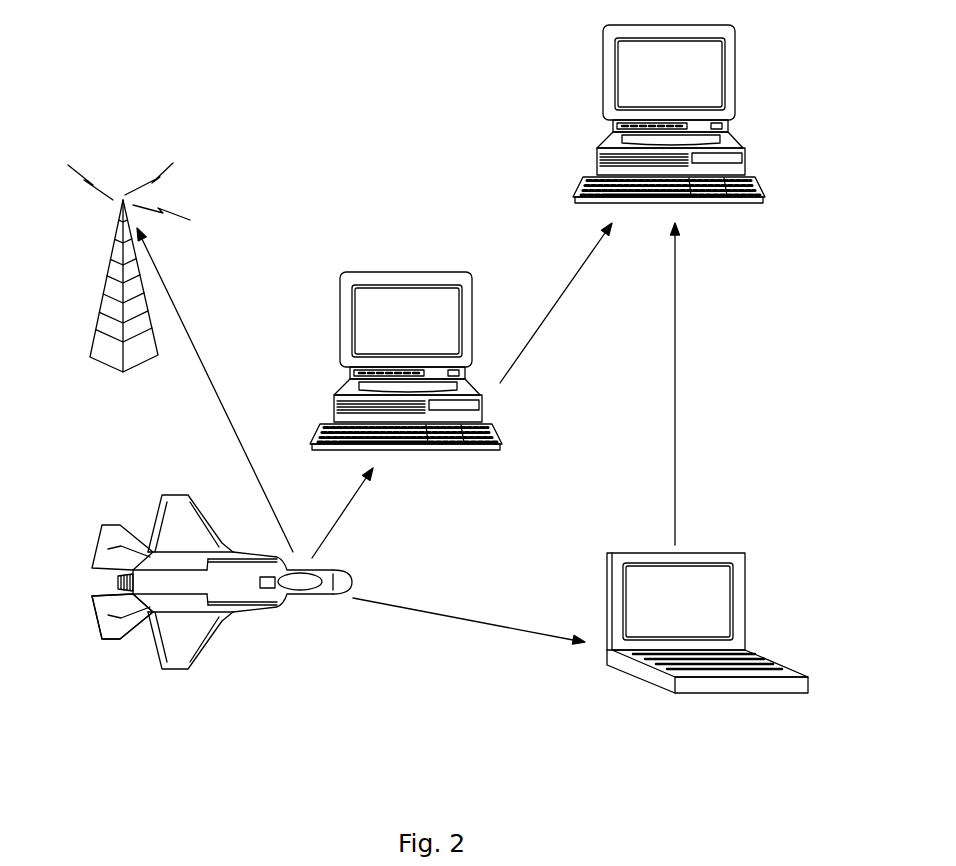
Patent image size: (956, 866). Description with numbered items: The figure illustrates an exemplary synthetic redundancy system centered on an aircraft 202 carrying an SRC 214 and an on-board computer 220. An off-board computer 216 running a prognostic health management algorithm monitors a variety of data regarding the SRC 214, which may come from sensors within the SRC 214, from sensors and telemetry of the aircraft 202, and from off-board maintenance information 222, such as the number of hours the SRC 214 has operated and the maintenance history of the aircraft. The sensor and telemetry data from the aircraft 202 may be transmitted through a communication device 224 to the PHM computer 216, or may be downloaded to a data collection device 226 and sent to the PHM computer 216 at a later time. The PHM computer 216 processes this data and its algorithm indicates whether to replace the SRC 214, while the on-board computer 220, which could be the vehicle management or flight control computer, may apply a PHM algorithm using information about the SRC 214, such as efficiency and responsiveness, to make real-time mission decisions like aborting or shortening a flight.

The aircraft 202 is at (133, 690).
The SRC 214 is at (105, 611).
The computer 216 is at (738, 70).
The on-board computer 220 is at (270, 590).
The maintenance information 222 is at (747, 585).
The communication device 224 is at (142, 372).
The data collection device 226 is at (485, 412).